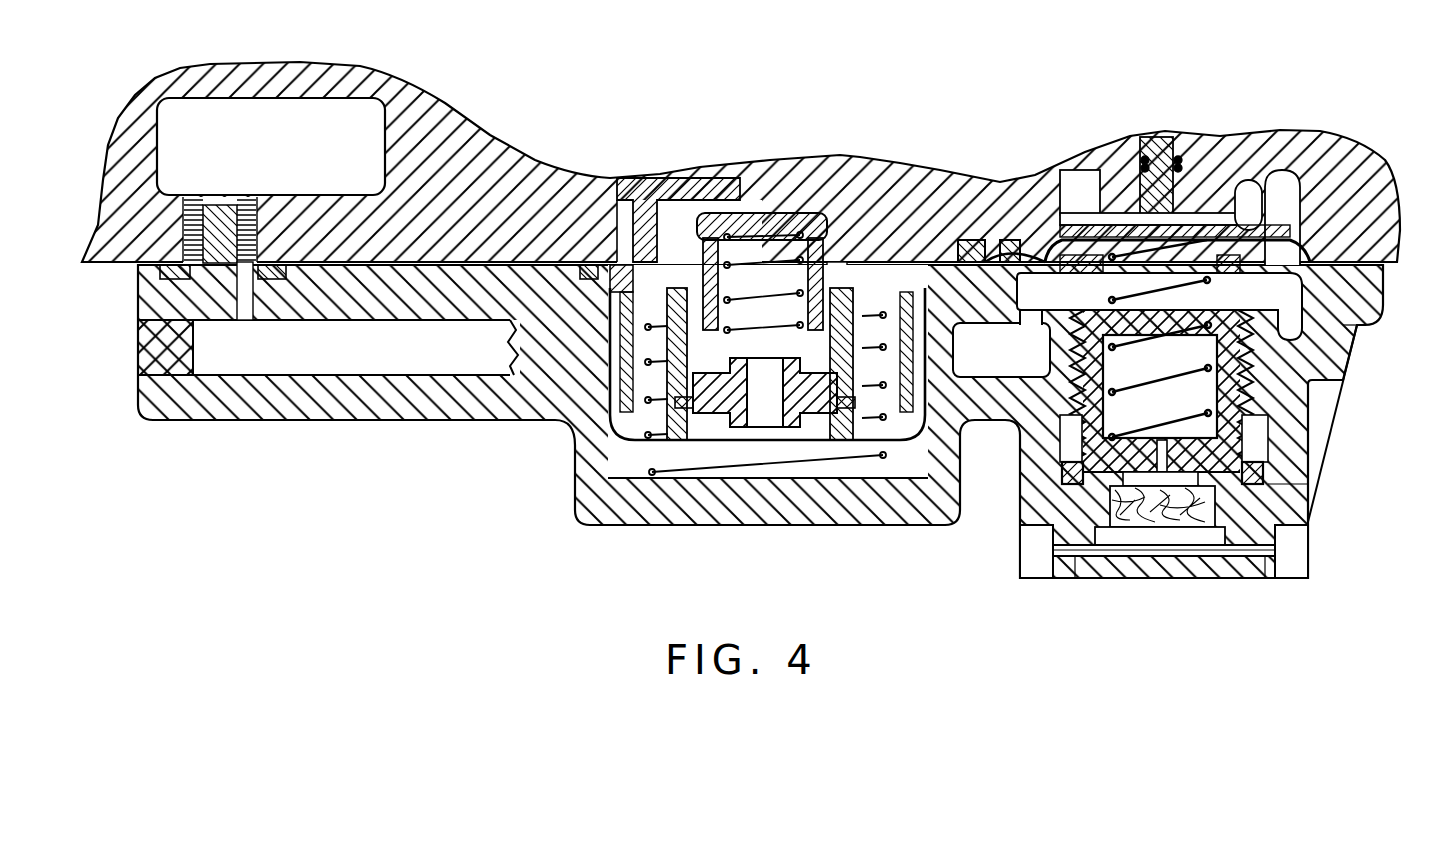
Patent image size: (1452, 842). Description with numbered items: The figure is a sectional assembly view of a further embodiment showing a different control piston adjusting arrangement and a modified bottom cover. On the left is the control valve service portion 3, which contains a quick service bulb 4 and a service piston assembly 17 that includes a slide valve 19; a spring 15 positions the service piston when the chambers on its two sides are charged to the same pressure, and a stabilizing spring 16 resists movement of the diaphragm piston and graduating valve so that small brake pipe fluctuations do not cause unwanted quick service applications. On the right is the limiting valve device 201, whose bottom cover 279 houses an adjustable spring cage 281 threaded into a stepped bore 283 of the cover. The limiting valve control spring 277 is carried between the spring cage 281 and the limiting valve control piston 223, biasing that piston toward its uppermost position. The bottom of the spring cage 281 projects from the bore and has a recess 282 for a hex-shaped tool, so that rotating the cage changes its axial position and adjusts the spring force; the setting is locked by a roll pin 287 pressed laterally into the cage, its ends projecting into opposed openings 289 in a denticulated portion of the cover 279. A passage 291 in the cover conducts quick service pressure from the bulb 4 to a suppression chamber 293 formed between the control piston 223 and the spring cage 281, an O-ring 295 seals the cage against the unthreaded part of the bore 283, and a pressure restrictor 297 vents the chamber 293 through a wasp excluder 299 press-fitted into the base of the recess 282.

The service portion 3 is at (512, 135).
The quick service bulb 4 is at (272, 161).
The spring 15 is at (690, 470).
The stabilizing spring 16 is at (752, 265).
The service piston assembly 17 is at (797, 194).
The slide valve 19 is at (672, 176).
The limiting valve device 201 is at (1078, 158).
The limiting valve control piston 223 is at (1055, 237).
The limiting valve control spring 277 is at (1200, 380).
The bottom cover 279 is at (340, 405).
The spring cage 281 is at (1266, 470).
The recess 282 is at (1120, 572).
The stepped bore 283 is at (1240, 427).
The roll pin 287 is at (1240, 572).
The openings 289 is at (1030, 563).
The passage 291 is at (245, 307).
The suppression chamber 293 is at (1365, 326).
The O-ring 295 is at (1270, 497).
The pressure restrictor 297 is at (1160, 455).
The wasp excluder 299 is at (1155, 530).